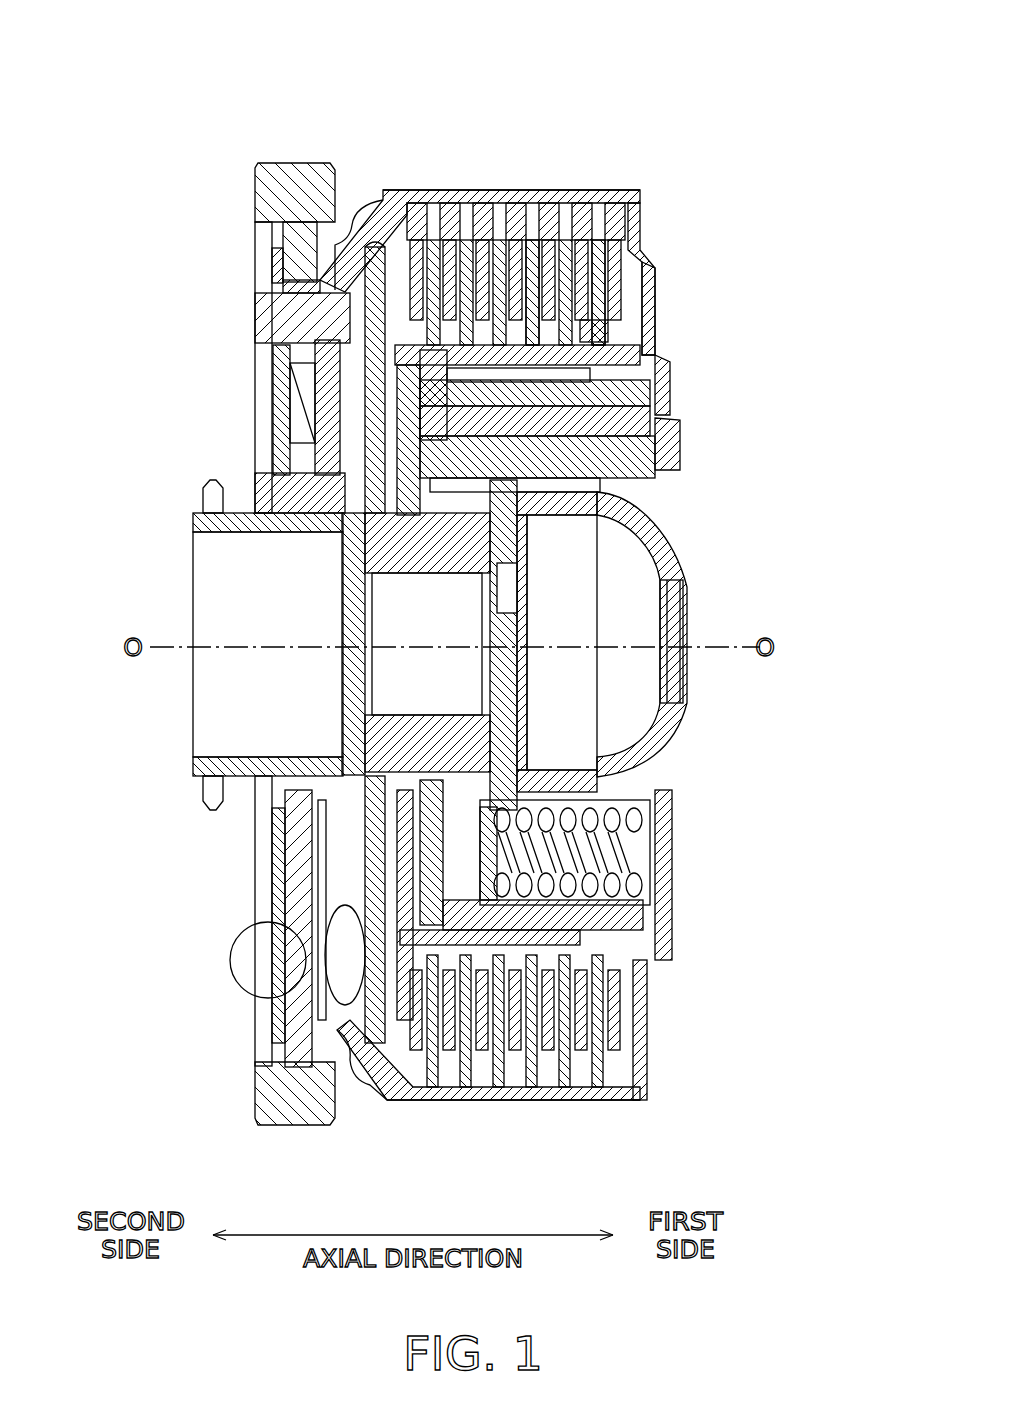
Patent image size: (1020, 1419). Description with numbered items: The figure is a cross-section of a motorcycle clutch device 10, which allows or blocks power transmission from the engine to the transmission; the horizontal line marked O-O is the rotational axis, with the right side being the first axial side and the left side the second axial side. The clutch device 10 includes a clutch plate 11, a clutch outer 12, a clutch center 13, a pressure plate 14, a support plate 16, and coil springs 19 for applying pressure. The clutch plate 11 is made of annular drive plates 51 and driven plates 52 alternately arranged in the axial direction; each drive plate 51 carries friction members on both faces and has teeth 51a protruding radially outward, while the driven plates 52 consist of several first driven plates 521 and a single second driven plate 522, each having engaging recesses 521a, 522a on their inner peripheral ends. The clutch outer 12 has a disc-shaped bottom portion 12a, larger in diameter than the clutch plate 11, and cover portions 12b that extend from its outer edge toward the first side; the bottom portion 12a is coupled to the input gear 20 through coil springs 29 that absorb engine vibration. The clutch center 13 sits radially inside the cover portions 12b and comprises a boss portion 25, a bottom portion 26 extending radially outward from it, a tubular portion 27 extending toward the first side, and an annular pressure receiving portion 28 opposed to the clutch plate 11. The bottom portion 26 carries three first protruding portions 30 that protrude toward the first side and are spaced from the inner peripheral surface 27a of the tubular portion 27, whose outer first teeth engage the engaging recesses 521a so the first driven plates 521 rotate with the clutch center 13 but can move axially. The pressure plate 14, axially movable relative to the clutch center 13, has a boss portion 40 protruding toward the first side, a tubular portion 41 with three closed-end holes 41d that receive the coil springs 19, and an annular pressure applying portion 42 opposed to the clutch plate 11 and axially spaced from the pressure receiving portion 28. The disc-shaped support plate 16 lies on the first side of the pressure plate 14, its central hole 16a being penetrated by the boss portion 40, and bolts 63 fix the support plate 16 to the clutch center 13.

The clutch device 10 is at (185, 130).
The clutch plate 11 is at (645, 195).
The clutch outer 12 is at (372, 186).
The bottom portion 12a is at (305, 442).
The cover portions 12b is at (428, 208).
The clutch center 13 is at (300, 400).
The pressure plate 14 is at (668, 290).
The support plate 16 is at (682, 378).
The hole 16a is at (672, 578).
The coil springs 19 is at (640, 830).
The input gear 20 is at (298, 170).
The boss portion 25 is at (370, 748).
The bottom portion 26 is at (410, 852).
The tubular portion 27 is at (620, 928).
The inner peripheral surface 27a is at (280, 497).
The pressure receiving portion 28 is at (415, 1082).
The coil springs 29 is at (268, 960).
The first protruding portions 30 is at (540, 595).
The boss portion 40 is at (690, 525).
The tubular portion 41 is at (630, 246).
The closed-end holes 41d is at (675, 725).
The pressure applying portion 42 is at (645, 1012).
The drive plates 51 is at (516, 172).
The teeth 51a is at (452, 215).
The driven plates 52 is at (518, 215).
The first driven plates 521 is at (557, 235).
The engaging recesses 521a is at (298, 345).
The second driven plate 522 is at (613, 220).
The engaging recesses 522a is at (596, 328).
The bolts 63 is at (682, 440).